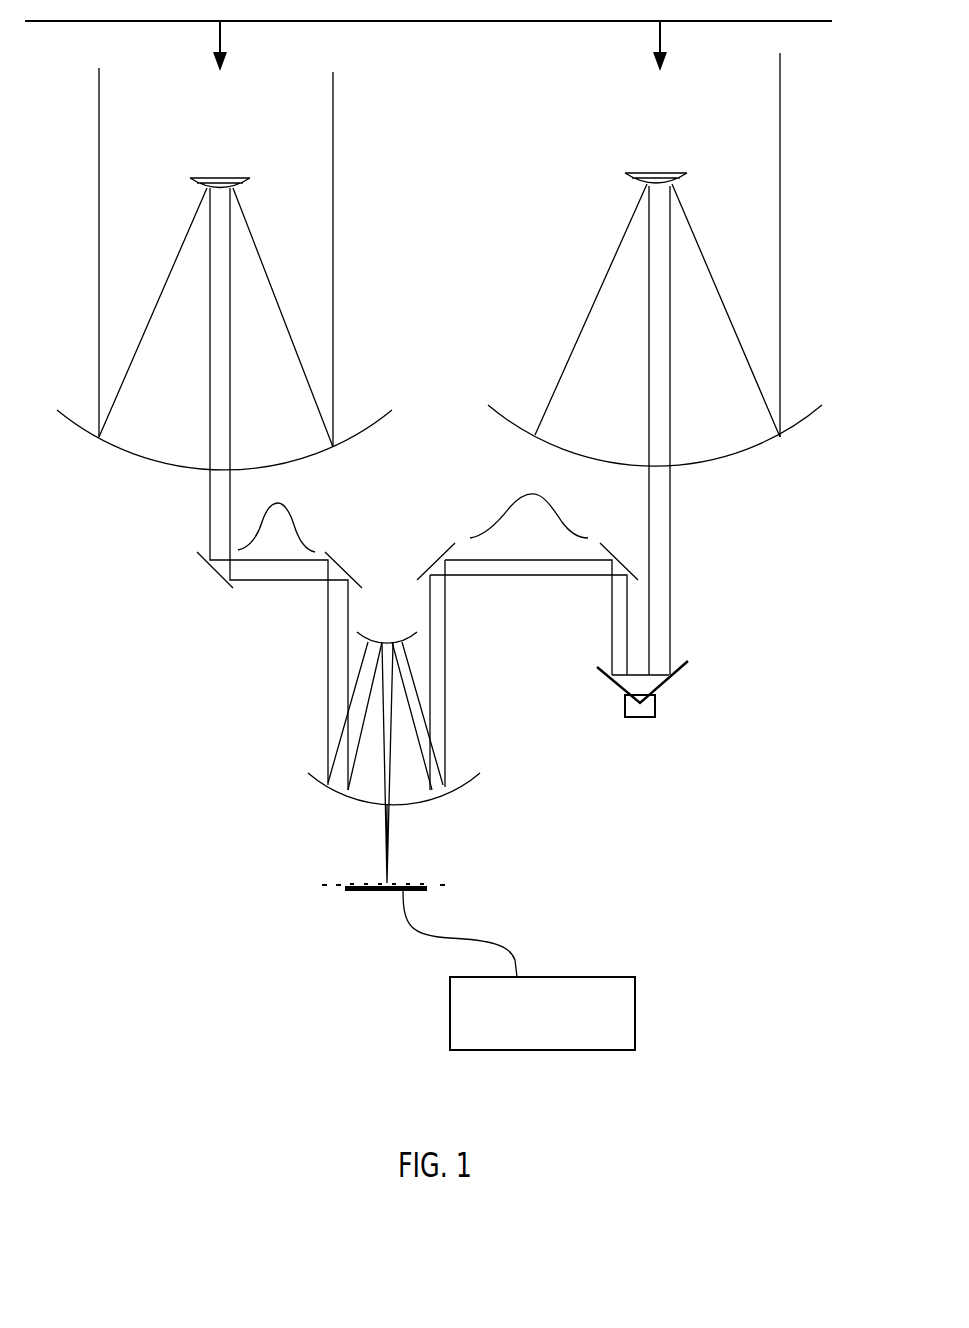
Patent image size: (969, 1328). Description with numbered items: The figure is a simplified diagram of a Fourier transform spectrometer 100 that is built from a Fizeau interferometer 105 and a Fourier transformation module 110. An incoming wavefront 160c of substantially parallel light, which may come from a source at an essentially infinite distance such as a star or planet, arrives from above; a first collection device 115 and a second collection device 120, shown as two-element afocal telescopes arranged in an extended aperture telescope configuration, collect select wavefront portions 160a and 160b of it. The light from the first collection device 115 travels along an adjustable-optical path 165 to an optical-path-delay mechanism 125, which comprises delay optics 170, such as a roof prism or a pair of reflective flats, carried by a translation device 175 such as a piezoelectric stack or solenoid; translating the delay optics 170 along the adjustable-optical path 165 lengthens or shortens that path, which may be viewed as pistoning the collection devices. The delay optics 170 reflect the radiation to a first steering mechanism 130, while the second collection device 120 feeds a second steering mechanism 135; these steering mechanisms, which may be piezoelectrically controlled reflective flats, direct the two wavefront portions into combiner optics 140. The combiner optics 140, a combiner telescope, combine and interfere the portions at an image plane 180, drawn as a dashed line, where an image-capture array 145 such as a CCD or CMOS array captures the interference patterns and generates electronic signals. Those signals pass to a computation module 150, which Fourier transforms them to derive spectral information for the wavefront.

The Fourier transform spectrometer 100 is at (184, 995).
The Fizeau interferometer 105 is at (133, 590).
The Fourier transformation module 110 is at (533, 910).
The first collection device 115 is at (508, 333).
The second collection device 120 is at (347, 190).
The optical-path-delay mechanism 125 is at (659, 709).
The first steering mechanism 130 is at (527, 630).
The second steering mechanism 135 is at (279, 533).
The combiner optics 140 is at (298, 727).
The image-capture array 145 is at (428, 891).
The computation module 150 is at (653, 977).
The first wavefront portion 160a is at (770, 105).
The second wavefront portion 160b is at (340, 95).
The wavefront 160c is at (80, 30).
The adjustable-optical path 165 is at (683, 533).
The delay optics 170 is at (607, 678).
The translation device 175 is at (632, 720).
The image plane 180 is at (322, 882).